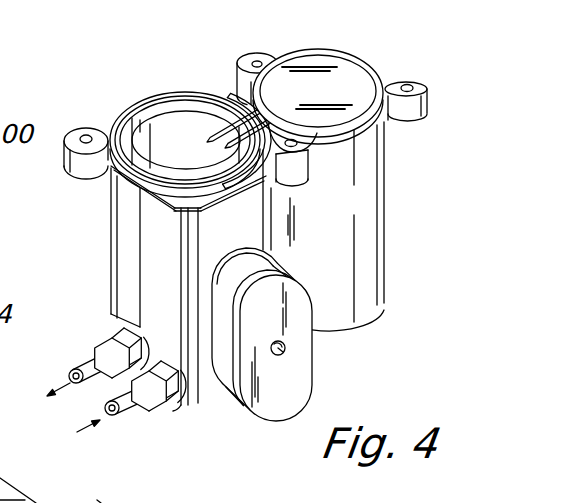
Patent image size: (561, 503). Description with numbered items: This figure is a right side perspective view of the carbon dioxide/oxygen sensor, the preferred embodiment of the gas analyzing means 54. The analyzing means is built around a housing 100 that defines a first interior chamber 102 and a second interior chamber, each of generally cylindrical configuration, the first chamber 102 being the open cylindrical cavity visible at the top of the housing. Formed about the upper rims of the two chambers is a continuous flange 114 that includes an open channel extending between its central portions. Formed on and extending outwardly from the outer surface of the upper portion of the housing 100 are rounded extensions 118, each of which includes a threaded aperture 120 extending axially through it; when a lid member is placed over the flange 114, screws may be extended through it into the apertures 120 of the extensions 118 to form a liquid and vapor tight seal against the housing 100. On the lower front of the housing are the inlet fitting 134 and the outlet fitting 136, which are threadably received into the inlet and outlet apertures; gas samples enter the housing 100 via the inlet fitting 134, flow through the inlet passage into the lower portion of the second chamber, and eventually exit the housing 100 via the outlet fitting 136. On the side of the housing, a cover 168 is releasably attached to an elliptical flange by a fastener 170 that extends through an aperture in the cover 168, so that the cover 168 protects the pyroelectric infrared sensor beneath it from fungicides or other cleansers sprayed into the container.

The gas analyzing means 54 is at (393, 42).
The housing 100 is at (388, 272).
The first interior chamber 102 is at (171, 125).
The continuous flange 114 is at (140, 103).
The rounded extensions 118 is at (242, 58).
The threaded apertures 120 is at (87, 133).
The inlet fitting 134 is at (153, 400).
The outlet fitting 136 is at (100, 345).
The cover 168 is at (266, 412).
The fastener 170 is at (286, 349).